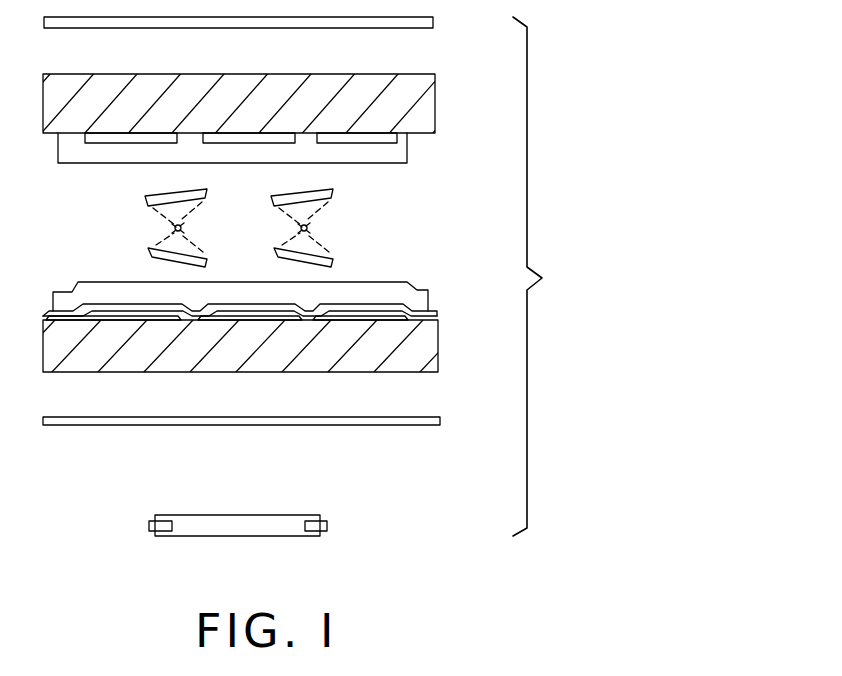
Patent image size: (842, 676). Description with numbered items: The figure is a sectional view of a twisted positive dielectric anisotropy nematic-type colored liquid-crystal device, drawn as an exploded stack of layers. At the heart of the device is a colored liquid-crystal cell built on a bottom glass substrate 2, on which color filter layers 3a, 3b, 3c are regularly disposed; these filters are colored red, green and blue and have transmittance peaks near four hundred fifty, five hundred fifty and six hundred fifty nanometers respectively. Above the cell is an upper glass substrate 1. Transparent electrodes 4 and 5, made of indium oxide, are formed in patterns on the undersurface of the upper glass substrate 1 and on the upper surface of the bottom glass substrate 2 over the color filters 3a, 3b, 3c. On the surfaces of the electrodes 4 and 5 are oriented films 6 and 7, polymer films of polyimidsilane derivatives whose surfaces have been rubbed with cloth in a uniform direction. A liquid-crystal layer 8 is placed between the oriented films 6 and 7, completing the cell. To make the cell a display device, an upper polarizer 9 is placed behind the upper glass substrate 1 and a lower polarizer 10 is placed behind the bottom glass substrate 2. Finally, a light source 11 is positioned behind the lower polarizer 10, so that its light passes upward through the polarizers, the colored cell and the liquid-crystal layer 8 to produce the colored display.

The upper glass substrate 1 is at (435, 97).
The bottom glass substrate 2 is at (427, 337).
The color filter layer 3a is at (107, 320).
The color filter layer 3b is at (240, 320).
The color filter layer 3c is at (349, 320).
The transparent electrode 4 is at (400, 137).
The transparent electrode 5 is at (413, 310).
The oriented film 6 is at (400, 153).
The oriented film 7 is at (397, 283).
The liquid-crystal layer 8 is at (147, 232).
The upper polarizer 9 is at (433, 22).
The lower polarizer 10 is at (441, 421).
The light source 11 is at (277, 536).